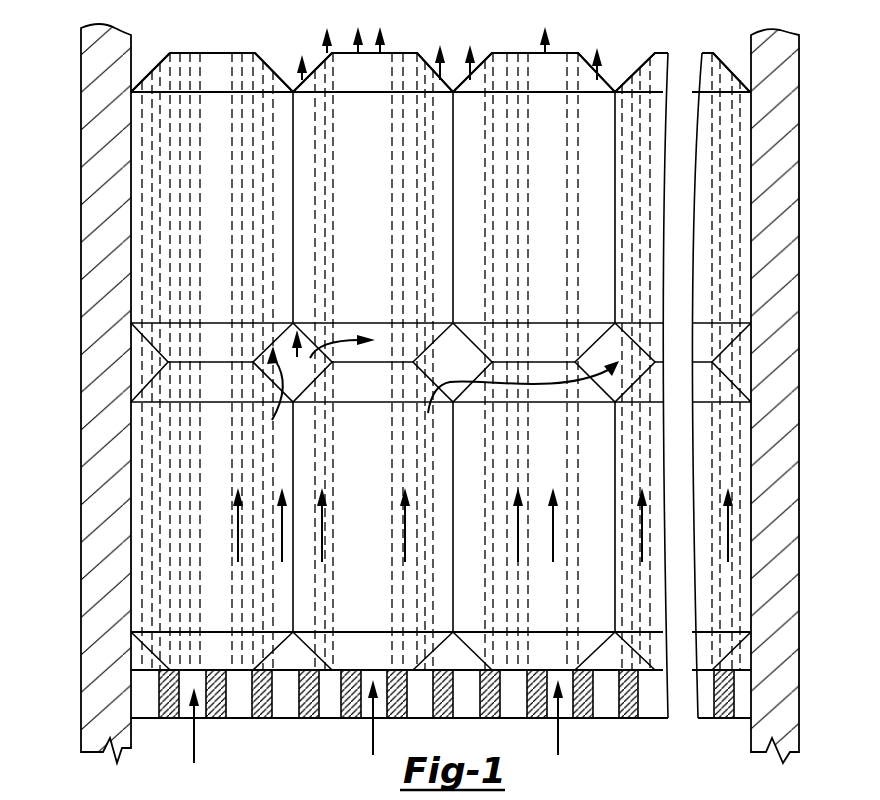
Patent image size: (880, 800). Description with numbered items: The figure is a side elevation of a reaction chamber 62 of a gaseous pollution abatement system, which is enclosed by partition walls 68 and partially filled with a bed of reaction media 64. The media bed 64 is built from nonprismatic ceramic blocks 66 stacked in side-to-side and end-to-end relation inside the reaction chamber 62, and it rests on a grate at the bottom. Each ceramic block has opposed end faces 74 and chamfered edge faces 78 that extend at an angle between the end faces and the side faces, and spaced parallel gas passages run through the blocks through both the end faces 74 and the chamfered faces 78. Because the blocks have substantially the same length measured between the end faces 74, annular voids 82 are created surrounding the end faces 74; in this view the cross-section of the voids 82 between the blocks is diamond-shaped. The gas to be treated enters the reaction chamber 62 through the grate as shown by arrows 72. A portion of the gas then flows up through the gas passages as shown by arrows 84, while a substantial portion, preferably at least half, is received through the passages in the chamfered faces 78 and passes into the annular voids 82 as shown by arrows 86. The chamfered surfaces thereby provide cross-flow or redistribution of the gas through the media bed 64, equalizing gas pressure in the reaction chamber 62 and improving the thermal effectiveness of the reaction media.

The reaction chamber 62 is at (141, 54).
The media bed 64 is at (148, 285).
The nonprismatic ceramic blocks 66 is at (224, 237).
The partition walls 68 is at (90, 410).
The gas flow arrows 72 is at (373, 744).
The end faces 74 is at (347, 53).
The chamfered edge faces 78 is at (460, 70).
The annular voids 82 is at (465, 350).
The gas flow arrows 84 is at (545, 53).
The gas flow arrows 86 is at (600, 68).